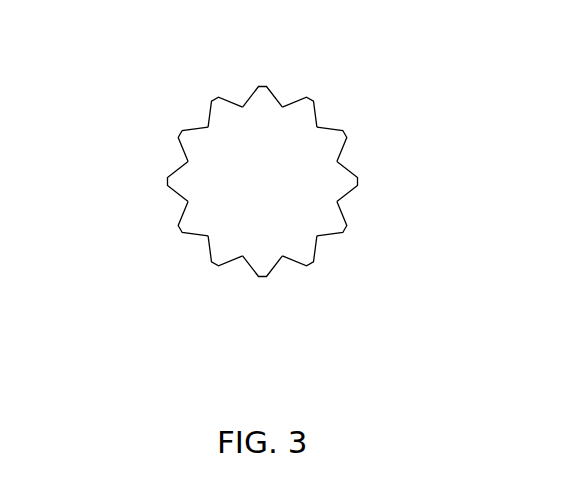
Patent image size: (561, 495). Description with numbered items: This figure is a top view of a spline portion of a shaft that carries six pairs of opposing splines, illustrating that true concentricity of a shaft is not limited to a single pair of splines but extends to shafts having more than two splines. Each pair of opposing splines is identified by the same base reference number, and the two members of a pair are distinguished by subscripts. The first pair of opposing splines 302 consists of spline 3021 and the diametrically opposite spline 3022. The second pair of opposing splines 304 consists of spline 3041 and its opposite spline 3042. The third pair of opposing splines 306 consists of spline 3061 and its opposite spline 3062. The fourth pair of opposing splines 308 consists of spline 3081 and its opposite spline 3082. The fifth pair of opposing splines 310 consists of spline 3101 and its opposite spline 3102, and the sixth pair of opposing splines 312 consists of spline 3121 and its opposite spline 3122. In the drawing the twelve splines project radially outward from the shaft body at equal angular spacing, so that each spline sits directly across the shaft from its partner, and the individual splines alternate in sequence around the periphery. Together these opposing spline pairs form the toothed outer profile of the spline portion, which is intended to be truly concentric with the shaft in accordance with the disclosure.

The pair of opposing splines 302 is at (290, 189).
The opposing spline 3021 is at (262, 86).
The opposing spline 3022 is at (262, 276).
The pair of opposing splines 304 is at (290, 199).
The opposing spline 3041 is at (310, 99).
The opposing spline 3042 is at (215, 264).
The pair of opposing splines 306 is at (276, 202).
The opposing spline 3061 is at (345, 134).
The opposing spline 3062 is at (180, 229).
The pair of opposing splines 308 is at (268, 192).
The opposing spline 3081 is at (358, 182).
The opposing spline 3082 is at (168, 182).
The pair of opposing splines 310 is at (259, 206).
The opposing spline 3101 is at (345, 229).
The opposing spline 3102 is at (180, 134).
The pair of opposing splines 312 is at (255, 190).
The opposing spline 3121 is at (310, 264).
The opposing spline 3122 is at (215, 99).